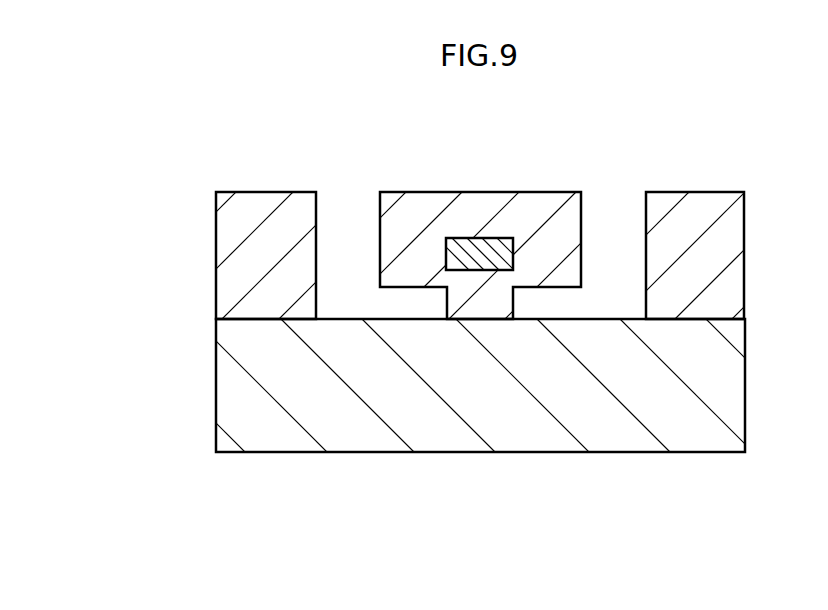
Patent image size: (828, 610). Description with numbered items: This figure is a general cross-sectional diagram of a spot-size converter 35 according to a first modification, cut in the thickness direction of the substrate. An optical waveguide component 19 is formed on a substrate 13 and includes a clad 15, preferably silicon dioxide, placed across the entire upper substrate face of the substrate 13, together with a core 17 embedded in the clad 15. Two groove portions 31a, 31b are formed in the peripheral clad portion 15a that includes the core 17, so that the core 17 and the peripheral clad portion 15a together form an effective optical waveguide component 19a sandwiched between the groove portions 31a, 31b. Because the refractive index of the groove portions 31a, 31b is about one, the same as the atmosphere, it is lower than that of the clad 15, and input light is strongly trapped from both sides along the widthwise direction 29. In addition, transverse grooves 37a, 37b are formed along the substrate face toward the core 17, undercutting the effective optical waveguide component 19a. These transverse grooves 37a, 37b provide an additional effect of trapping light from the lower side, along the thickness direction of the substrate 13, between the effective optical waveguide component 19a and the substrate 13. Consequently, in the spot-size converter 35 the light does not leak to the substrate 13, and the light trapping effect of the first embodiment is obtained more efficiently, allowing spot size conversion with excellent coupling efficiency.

The substrate 13 is at (227, 383).
The clad 15 is at (225, 298).
The peripheral clad portion 15a is at (400, 221).
The core 17 is at (458, 258).
The optical waveguide component 19 is at (414, 305).
The effective optical waveguide component 19a is at (414, 305).
The widthwise direction 29 is at (758, 506).
The groove portion 31a is at (343, 204).
The groove portion 31b is at (608, 204).
The spot-size converter 35 is at (730, 157).
The transverse groove 37a is at (408, 305).
The transverse groove 37b is at (532, 303).